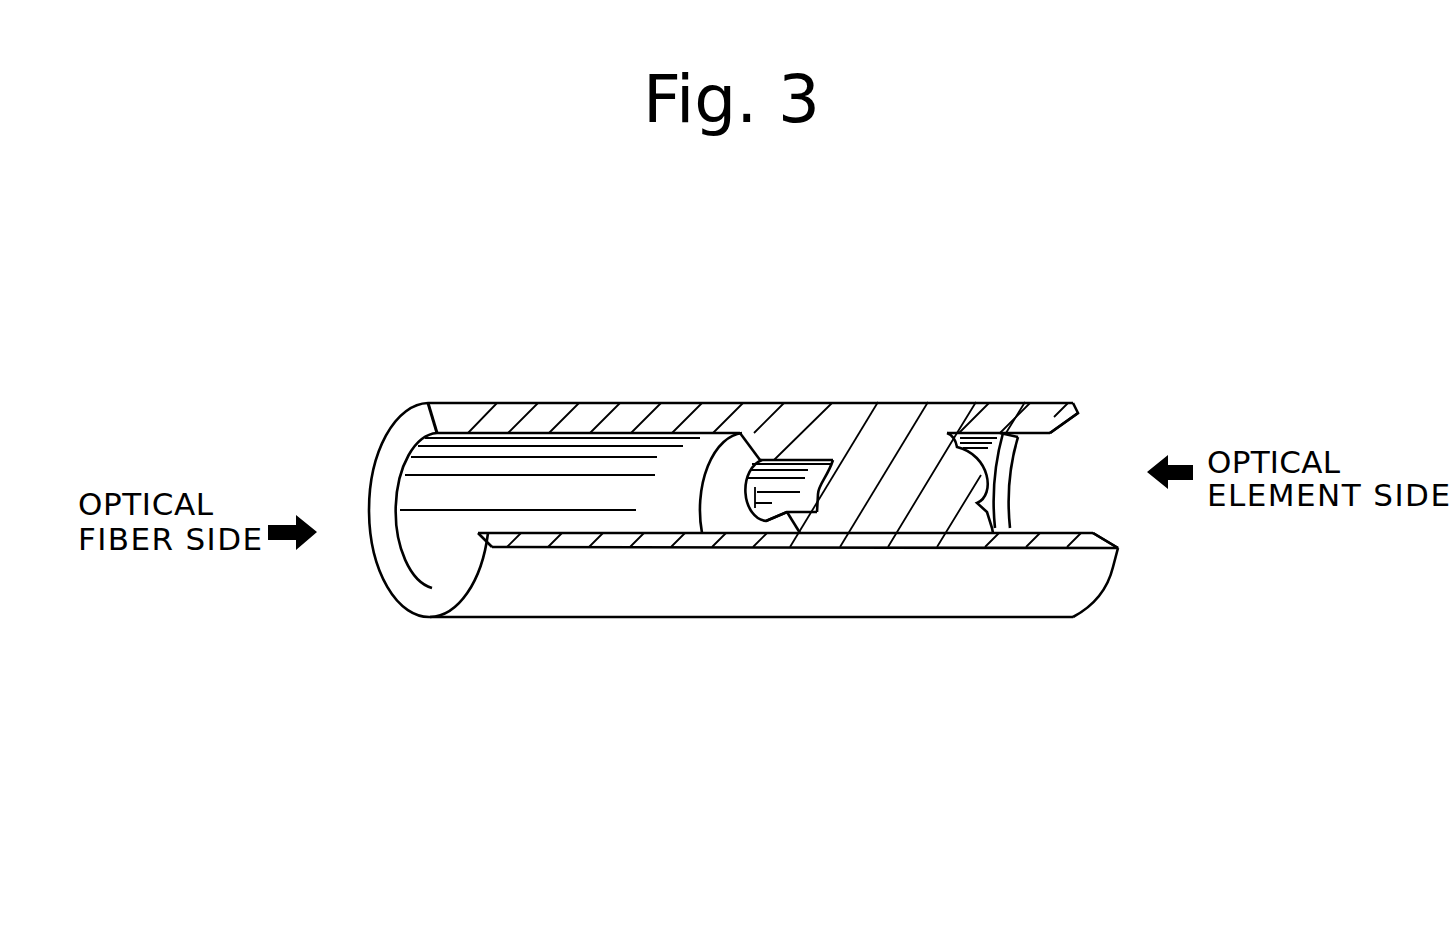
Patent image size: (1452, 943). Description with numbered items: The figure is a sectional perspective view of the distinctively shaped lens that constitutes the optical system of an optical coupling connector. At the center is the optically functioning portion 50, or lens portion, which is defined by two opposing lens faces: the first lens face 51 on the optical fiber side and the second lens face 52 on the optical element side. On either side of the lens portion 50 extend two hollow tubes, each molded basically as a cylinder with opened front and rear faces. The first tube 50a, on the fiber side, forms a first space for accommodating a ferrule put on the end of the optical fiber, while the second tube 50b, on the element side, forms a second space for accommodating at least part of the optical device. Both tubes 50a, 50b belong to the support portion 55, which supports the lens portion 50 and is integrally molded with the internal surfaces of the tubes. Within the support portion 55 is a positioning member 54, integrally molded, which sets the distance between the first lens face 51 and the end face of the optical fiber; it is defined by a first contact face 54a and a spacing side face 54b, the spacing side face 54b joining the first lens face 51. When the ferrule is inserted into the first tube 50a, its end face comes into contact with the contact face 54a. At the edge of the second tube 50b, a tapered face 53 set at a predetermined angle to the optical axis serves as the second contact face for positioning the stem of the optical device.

The optically functioning portion 50 is at (960, 387).
The first tube 50a is at (530, 403).
The second tube 50b is at (1015, 407).
The first lens face 51 is at (765, 518).
The second lens face 52 is at (987, 477).
The tapered face 53 is at (1095, 432).
The positioning member 54 is at (771, 448).
The first contact face 54a is at (725, 472).
The spacing side face 54b is at (755, 523).
The support portion 55 is at (880, 440).